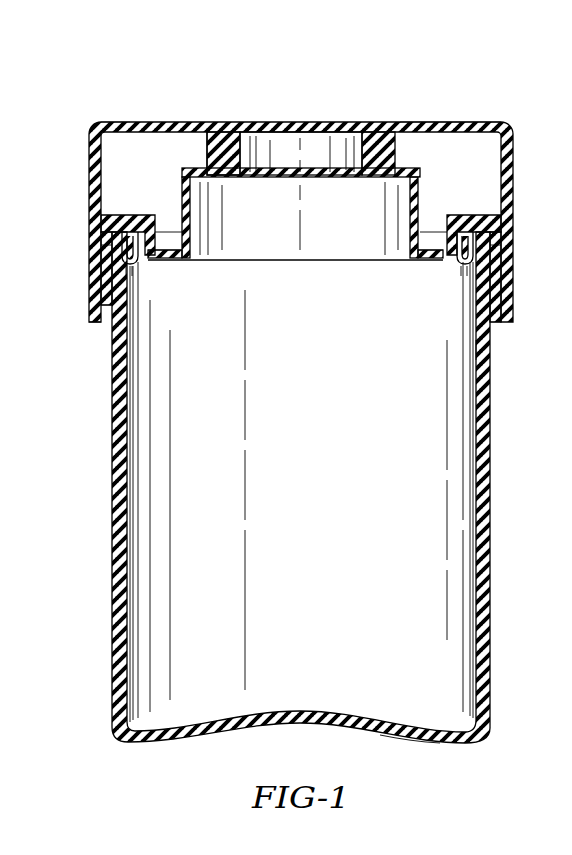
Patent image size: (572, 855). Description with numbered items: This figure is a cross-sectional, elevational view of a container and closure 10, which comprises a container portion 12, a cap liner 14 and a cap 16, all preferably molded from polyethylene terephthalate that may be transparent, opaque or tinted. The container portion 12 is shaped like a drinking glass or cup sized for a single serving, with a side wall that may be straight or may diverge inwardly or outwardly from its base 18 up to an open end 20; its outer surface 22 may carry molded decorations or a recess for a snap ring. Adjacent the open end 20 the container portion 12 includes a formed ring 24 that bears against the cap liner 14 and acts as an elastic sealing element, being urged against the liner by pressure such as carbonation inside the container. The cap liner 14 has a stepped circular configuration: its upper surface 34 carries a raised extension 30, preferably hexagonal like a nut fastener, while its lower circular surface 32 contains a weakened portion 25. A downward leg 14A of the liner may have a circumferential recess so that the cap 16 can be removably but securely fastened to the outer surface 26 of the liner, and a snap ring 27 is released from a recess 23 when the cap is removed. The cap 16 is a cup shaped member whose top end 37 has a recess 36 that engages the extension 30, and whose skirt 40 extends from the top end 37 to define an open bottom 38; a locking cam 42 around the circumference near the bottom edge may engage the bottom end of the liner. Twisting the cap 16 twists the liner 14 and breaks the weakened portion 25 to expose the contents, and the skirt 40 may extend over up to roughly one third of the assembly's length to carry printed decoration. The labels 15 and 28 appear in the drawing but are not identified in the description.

The container and closure 10 is at (82, 105).
The container portion 12 is at (467, 499).
The cap liner 14 is at (466, 214).
The downward leg 14A is at (92, 272).
The skirt ring 15 is at (500, 270).
The cap 16 is at (506, 216).
The base 18 is at (412, 742).
The open end 20 is at (318, 248).
The outer surface 22 is at (480, 352).
The recess 23 is at (104, 262).
The formed ring 24 is at (140, 268).
The weakened portion 25 is at (170, 259).
The outer surface 26 is at (472, 268).
The snap ring 27 is at (503, 258).
The shoulder 28 is at (118, 216).
The extension 30 is at (318, 124).
The lower circular surface 32 is at (412, 259).
The upper surface 34 is at (205, 166).
The recess 36 is at (228, 130).
The top end 37 is at (472, 124).
The open bottom 38 is at (98, 320).
The skirt 40 is at (102, 246).
The locking cam 42 is at (496, 318).